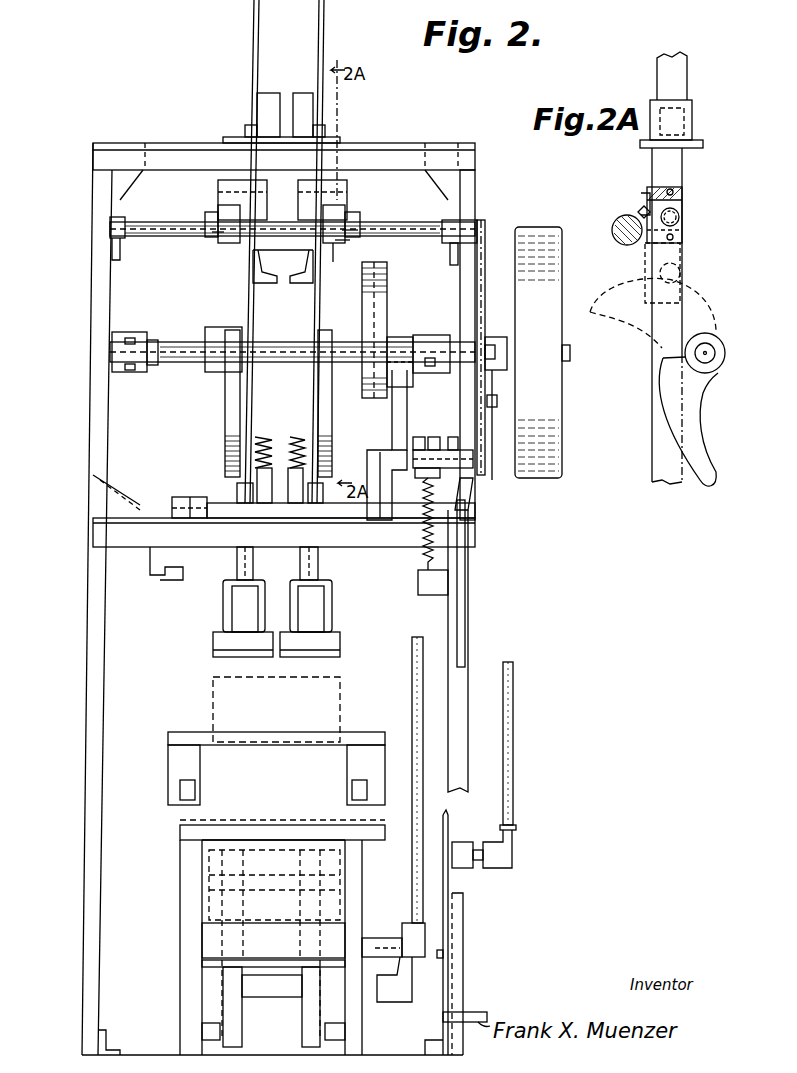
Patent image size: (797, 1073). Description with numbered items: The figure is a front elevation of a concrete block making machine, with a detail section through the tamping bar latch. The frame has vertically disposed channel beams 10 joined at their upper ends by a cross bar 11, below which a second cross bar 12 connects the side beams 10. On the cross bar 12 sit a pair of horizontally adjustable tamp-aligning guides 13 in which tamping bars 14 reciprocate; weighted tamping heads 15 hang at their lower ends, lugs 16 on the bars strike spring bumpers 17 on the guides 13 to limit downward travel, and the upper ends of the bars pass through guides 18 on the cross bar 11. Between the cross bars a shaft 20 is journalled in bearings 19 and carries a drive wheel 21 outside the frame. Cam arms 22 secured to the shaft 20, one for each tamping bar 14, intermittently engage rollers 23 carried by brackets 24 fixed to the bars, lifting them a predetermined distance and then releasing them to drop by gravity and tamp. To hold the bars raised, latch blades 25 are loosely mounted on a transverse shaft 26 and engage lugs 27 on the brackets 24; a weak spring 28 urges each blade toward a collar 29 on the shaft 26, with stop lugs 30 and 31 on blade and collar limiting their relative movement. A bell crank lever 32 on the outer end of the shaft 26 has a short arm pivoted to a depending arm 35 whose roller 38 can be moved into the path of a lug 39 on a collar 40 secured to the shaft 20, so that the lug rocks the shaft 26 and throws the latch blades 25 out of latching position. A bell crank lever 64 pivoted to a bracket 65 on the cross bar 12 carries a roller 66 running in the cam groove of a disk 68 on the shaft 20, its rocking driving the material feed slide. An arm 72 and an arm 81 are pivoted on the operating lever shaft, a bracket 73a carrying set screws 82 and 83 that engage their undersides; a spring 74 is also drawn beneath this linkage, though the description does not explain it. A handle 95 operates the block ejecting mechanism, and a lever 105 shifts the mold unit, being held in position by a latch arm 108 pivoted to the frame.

In FIG. 2, the channel beams 10 is at (88, 760).
In FIG. 2, the cross bar 11 is at (380, 162).
In FIG. 2, the cross bar 12 is at (173, 537).
In FIG. 2, the tamp-aligning guides 13 is at (292, 484).
In FIG. 2, the tamping bars 14 is at (315, 289).
In FIG. 2A, the tamping bars 14 is at (660, 452).
In FIG. 2, the tamping heads 15 is at (257, 640).
In FIG. 2, the lugs 16 is at (262, 280).
In FIG. 2, the spring bumpers 17 is at (293, 456).
In FIG. 2, the guides 18 is at (268, 112).
In FIG. 2, the bearings 19 is at (112, 345).
In FIG. 2, the shaft 20 is at (183, 354).
In FIG. 2, the drive wheel 21 is at (548, 415).
In FIG. 2, the cam arms 22 is at (228, 400).
In FIG. 2A, the cam arms 22 is at (703, 473).
In FIG. 2A, the rollers 23 is at (680, 218).
In FIG. 2, the brackets 24 is at (262, 190).
In FIG. 2A, the brackets 24 is at (684, 190).
In FIG. 2, the latch blades 25 is at (222, 210).
In FIG. 2A, the latch blades 25 is at (640, 207).
In FIG. 2, the transverse shaft 26 is at (410, 238).
In FIG. 2A, the transverse shaft 26 is at (612, 228).
In FIG. 2A, the lugs 27 is at (647, 193).
In FIG. 2, the spring 28 is at (210, 218).
In FIG. 2, the collar 29 is at (213, 235).
In FIG. 2, the stop lug 30 is at (336, 248).
In FIG. 2, the stop lug 31 is at (352, 234).
In FIG. 2, the bell crank lever 32 is at (478, 225).
In FIG. 2, the arm 35 is at (485, 245).
In FIG. 2, the roller 38 is at (487, 292).
In FIG. 2, the lug 39 is at (492, 385).
In FIG. 2, the collar 40 is at (496, 337).
In FIG. 2, the bell crank lever 64 is at (395, 418).
In FIG. 2, the bracket 65 is at (373, 470).
In FIG. 2, the roller 66 is at (389, 353).
In FIG. 2, the disk 68 is at (378, 302).
In FIG. 2, the arm 72 is at (433, 437).
In FIG. 2, the bracket 73a is at (468, 490).
In FIG. 2, the spring 74 is at (425, 480).
In FIG. 2, the arm 81 is at (419, 437).
In FIG. 2, the set screw 82 is at (432, 483).
In FIG. 2, the set screw 83 is at (452, 522).
In FIG. 2, the handle 95 is at (422, 800).
In FIG. 2, the lever 105 is at (513, 730).
In FIG. 2, the arm 108 is at (448, 882).